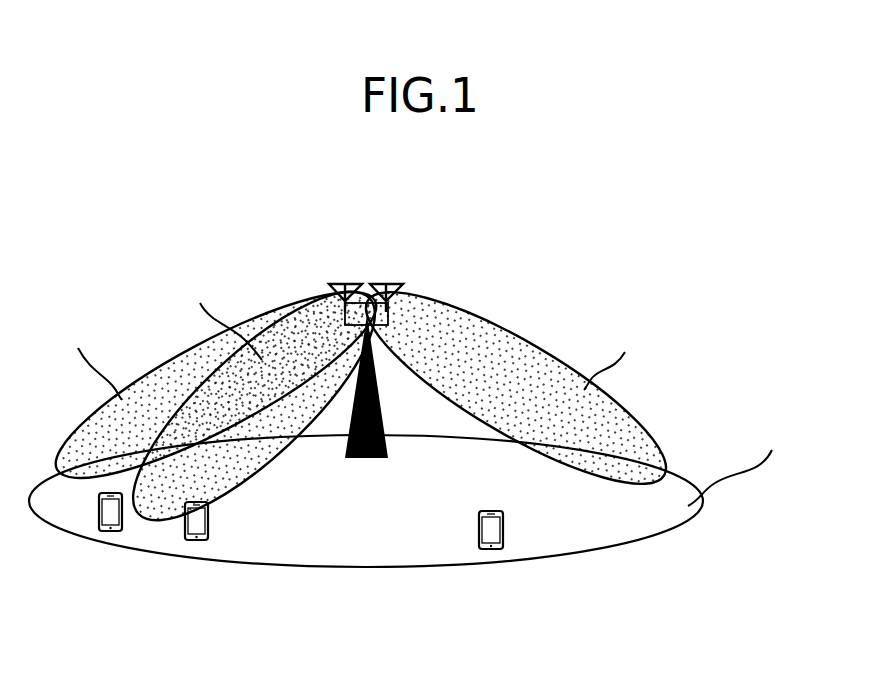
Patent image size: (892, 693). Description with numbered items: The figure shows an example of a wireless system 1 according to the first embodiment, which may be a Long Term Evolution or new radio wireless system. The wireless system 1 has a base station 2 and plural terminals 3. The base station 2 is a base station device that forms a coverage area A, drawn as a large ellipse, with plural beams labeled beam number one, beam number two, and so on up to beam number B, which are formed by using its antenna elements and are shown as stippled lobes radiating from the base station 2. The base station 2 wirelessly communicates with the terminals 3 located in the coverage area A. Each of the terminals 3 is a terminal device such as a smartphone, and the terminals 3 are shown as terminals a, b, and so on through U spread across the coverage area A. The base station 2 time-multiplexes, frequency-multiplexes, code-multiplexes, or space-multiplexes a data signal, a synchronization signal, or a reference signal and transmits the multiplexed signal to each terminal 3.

The wireless system 1 is at (434, 414).
The base station 2 is at (390, 266).
The terminals 3 is at (112, 532).